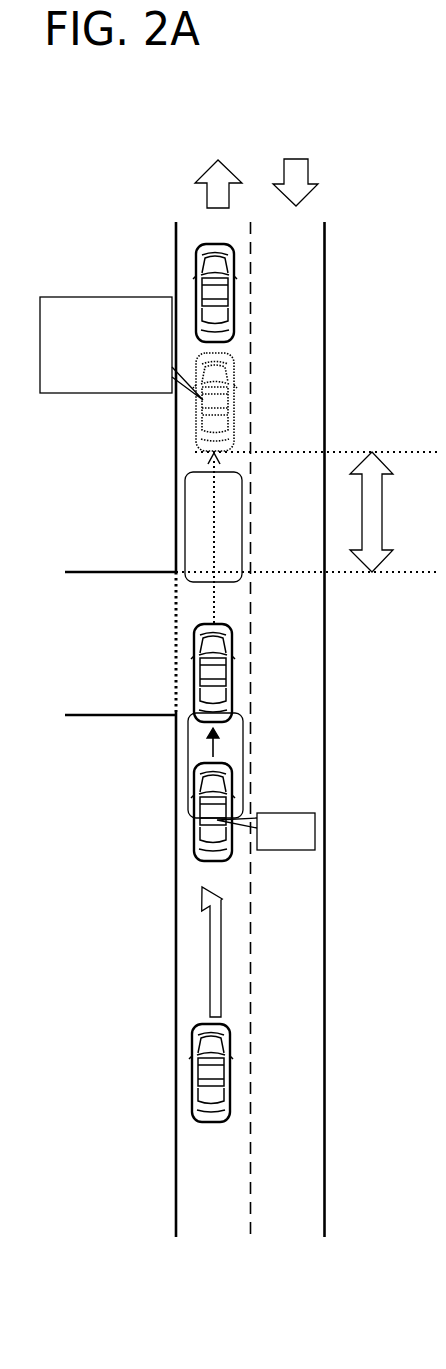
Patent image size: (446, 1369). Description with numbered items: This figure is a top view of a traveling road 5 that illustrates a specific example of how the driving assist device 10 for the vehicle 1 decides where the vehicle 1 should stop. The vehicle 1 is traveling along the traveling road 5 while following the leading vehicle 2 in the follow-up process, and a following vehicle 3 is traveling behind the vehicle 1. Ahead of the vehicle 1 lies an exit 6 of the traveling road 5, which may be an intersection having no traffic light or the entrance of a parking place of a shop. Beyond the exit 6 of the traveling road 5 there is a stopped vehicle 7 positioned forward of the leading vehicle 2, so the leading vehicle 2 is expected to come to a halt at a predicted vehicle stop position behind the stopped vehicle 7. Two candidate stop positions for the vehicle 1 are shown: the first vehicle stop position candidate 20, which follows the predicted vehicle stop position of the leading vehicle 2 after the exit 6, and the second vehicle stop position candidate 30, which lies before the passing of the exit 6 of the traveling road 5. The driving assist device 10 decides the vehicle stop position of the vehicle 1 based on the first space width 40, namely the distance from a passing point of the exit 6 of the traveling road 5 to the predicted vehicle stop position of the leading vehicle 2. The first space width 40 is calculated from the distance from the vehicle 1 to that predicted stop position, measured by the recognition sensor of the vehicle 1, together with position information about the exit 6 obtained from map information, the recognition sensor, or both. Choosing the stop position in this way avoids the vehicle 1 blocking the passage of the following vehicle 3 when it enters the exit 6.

The vehicle 1 is at (193, 830).
The leading vehicle 2 is at (195, 404).
The following vehicle 3 is at (191, 1068).
The traveling road 5 is at (176, 1175).
The exit of the traveling road 6 is at (176, 598).
The stopped vehicle 7 is at (195, 275).
The driving assist device 10 is at (266, 831).
The first vehicle stop position candidate 20 is at (185, 498).
The second vehicle stop position candidate 30 is at (243, 735).
The first space width 40 is at (382, 492).